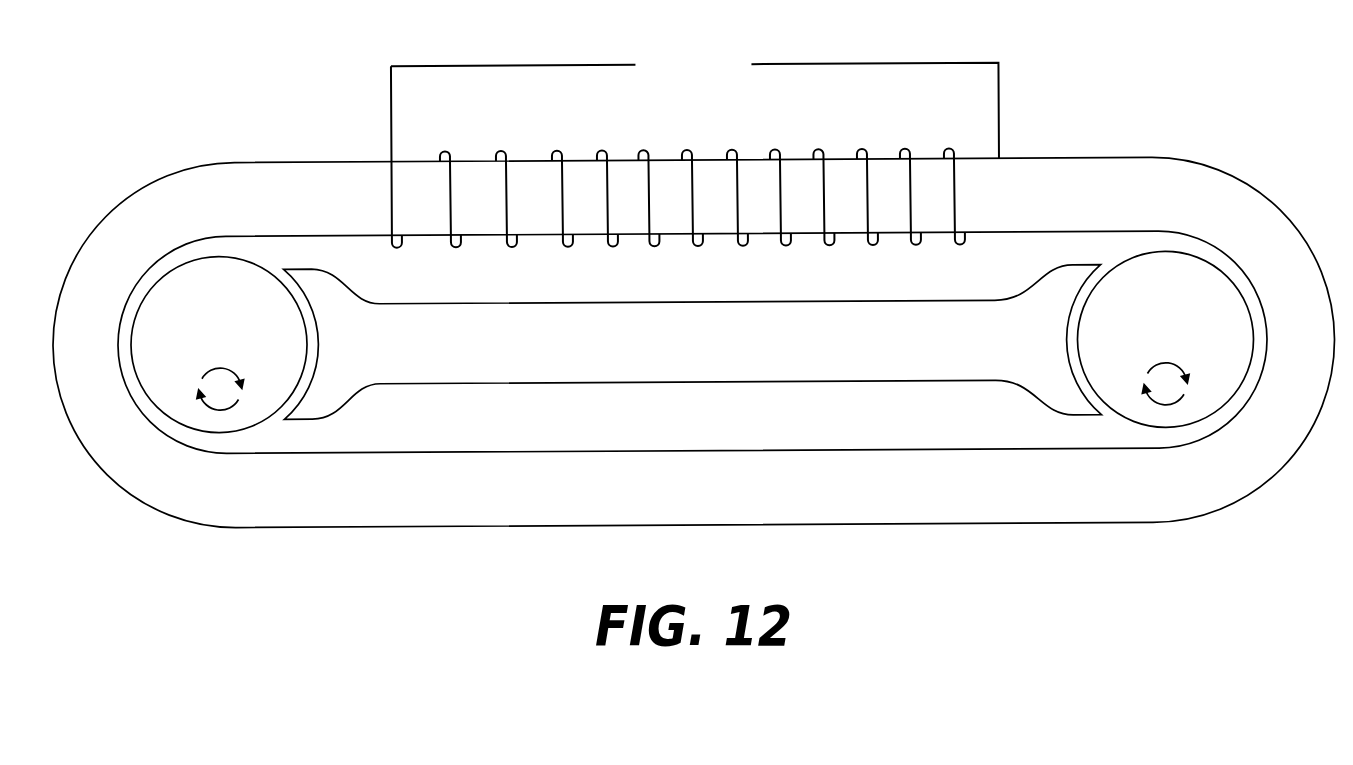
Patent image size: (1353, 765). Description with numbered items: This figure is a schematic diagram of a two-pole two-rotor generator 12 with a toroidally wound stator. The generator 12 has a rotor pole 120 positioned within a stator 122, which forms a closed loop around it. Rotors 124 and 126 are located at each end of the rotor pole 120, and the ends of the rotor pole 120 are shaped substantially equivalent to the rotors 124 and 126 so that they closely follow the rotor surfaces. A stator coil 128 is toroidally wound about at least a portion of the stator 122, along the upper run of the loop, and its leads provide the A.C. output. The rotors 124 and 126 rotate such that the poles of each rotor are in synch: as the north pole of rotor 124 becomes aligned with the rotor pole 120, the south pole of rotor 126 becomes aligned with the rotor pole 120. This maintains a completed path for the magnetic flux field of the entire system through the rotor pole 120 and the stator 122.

The generator 12 is at (693, 284).
The rotor pole 120 is at (693, 342).
The stator 122 is at (694, 342).
The rotor 124 is at (219, 344).
The rotor 126 is at (1165, 339).
The stator coil 128 is at (906, 152).